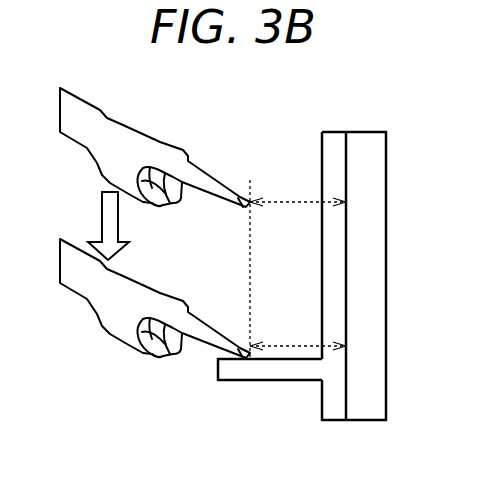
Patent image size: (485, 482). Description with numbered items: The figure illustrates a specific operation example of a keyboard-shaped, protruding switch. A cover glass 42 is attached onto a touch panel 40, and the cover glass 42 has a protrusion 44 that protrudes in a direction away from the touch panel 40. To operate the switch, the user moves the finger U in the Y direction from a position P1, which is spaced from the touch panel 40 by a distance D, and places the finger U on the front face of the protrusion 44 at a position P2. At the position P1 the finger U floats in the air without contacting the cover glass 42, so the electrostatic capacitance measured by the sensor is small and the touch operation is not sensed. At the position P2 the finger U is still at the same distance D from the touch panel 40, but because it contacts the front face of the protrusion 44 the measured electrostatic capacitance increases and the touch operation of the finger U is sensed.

The touch panel 40 is at (372, 131).
The cover glass 42 is at (337, 131).
The protrusion 44 is at (259, 381).
The finger U is at (152, 131).
The Y direction Y is at (103, 226).
The position P1 is at (236, 250).
The position P2 is at (229, 307).
The distance D is at (298, 261).